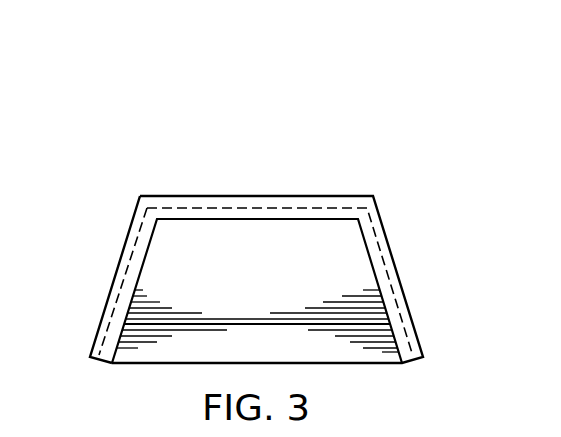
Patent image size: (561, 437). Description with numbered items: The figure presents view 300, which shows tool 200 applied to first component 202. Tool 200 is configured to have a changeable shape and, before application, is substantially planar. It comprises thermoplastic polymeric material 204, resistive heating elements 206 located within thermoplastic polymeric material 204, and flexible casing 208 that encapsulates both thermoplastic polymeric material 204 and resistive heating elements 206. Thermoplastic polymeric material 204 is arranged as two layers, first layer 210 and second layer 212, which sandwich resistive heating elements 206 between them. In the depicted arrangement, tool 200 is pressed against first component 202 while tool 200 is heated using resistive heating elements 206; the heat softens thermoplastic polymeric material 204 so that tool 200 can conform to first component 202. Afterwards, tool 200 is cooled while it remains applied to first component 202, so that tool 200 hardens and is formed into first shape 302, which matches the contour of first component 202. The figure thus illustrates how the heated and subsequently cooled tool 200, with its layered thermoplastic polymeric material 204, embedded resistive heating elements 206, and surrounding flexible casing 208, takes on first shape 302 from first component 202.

The view 300 is at (189, 64).
The first shape 302 is at (398, 135).
The tool 200 is at (115, 152).
The first component 202 is at (278, 305).
The thermoplastic polymeric material 204 is at (122, 280).
The resistive heating elements 206 is at (106, 332).
The flexible casing 208 is at (300, 195).
The first layer 210 is at (198, 202).
The second layer 212 is at (213, 213).